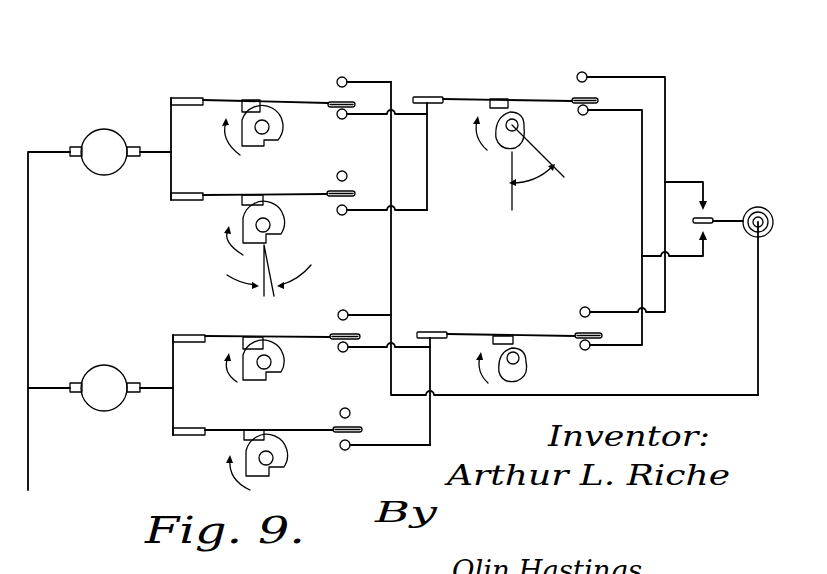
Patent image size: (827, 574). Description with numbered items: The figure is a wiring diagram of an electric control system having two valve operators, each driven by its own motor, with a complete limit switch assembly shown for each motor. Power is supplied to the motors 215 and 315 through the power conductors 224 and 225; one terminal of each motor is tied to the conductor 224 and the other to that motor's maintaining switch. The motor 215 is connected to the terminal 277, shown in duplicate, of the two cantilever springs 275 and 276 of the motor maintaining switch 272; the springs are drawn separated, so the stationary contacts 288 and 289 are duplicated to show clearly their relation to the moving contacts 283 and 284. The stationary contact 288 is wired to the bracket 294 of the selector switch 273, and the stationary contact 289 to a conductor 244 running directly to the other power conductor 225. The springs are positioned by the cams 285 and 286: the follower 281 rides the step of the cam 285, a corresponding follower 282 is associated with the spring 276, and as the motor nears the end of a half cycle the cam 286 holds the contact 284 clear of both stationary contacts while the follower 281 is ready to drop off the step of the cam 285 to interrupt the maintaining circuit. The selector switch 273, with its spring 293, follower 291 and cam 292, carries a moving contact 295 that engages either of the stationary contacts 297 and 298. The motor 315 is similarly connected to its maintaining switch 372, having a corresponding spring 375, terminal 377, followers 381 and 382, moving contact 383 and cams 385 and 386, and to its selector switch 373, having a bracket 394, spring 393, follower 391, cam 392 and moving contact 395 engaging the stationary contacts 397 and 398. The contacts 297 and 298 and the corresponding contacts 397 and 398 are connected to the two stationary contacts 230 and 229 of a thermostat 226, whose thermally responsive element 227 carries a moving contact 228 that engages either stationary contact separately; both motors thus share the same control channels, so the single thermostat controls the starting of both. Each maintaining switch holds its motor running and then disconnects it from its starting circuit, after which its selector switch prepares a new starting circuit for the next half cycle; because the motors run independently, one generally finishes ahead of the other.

The motor 215 is at (106, 129).
The power conductor 224 is at (28, 259).
The power conductor 225 is at (757, 326).
The thermostat 226 is at (714, 175).
The thermally responsive element 227 is at (735, 148).
The moving contact 228 is at (713, 218).
The stationary contact 229 is at (674, 240).
The stationary contact 230 is at (686, 197).
The conductor 244 is at (650, 395).
The motor maintaining switch 272 is at (247, 168).
The selector switch 273 is at (539, 172).
The cantilever spring 275 is at (222, 98).
The cantilever spring 276 is at (292, 194).
The terminal 277 is at (187, 193).
The follower 281 is at (266, 84).
The pivot block 282 is at (242, 201).
The moving contact 283 is at (334, 103).
The moving contact 284 is at (352, 192).
The cam 285 is at (270, 127).
The cam 286 is at (272, 225).
The stationary contact 288 is at (346, 119).
The stationary contact 289 is at (342, 77).
The pivot block 291 is at (503, 99).
The cam 292 is at (522, 129).
The contact arm 293 is at (528, 100).
The bracket 294 is at (430, 97).
The moving contact 295 is at (599, 101).
The stationary contact 297 is at (586, 116).
The stationary contact 298 is at (588, 77).
The motor 315 is at (110, 365).
The maintaining switch 372 is at (276, 378).
The selector switch 373 is at (535, 331).
The contact arm 375 is at (296, 335).
The clamp 377 is at (190, 428).
The pivot block 381 is at (264, 326).
The contact arm 382 is at (266, 430).
The contact 383 is at (335, 341).
The cam 385 is at (262, 380).
The cam 386 is at (276, 459).
The pivot block 391 is at (507, 328).
The cam 392 is at (528, 365).
The contact arm 393 is at (538, 335).
The contact bar 394 is at (438, 332).
The contact 395 is at (599, 334).
The stationary contact 397 is at (591, 348).
The stationary contact 398 is at (597, 293).